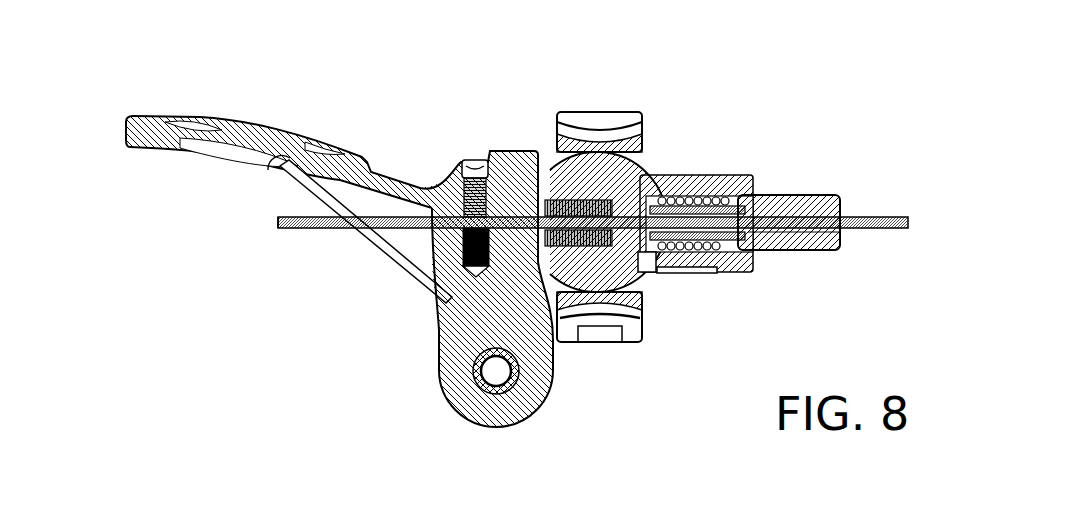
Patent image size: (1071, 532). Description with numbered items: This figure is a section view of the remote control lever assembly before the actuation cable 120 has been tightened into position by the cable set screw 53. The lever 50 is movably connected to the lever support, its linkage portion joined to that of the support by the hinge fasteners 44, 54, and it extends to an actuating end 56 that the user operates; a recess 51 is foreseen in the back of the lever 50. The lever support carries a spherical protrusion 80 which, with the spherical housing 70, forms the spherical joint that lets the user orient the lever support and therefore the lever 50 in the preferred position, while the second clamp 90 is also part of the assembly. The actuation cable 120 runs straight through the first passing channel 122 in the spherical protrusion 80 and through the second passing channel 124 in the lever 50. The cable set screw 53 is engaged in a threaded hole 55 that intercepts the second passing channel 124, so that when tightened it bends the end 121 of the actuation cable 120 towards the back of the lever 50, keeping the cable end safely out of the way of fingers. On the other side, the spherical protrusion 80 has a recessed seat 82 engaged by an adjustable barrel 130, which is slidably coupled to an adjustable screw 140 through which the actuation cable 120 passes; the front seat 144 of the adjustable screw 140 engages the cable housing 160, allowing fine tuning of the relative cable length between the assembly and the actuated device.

The hinge fastener 44 is at (496, 371).
The lever 50 is at (387, 160).
The recess 51 is at (372, 194).
The cable set screw 53 is at (490, 152).
The hinge fastener 54 is at (506, 382).
The threaded hole 55 is at (478, 190).
The actuating end 56 is at (130, 144).
The spherical housing 70 is at (596, 160).
The spherical protrusion 80 is at (611, 325).
The recessed seat 82 is at (685, 268).
The second clamp 90 is at (605, 112).
The actuation cable 120 is at (885, 217).
The end of the actuation cable 121 is at (288, 229).
The first passing channel 122 is at (641, 263).
The second passing channel 124 is at (513, 233).
The adjustable barrel 130 is at (720, 273).
The adjustable screw 140 is at (740, 176).
The front seat 144 is at (752, 238).
The cable housing 160 is at (824, 197).